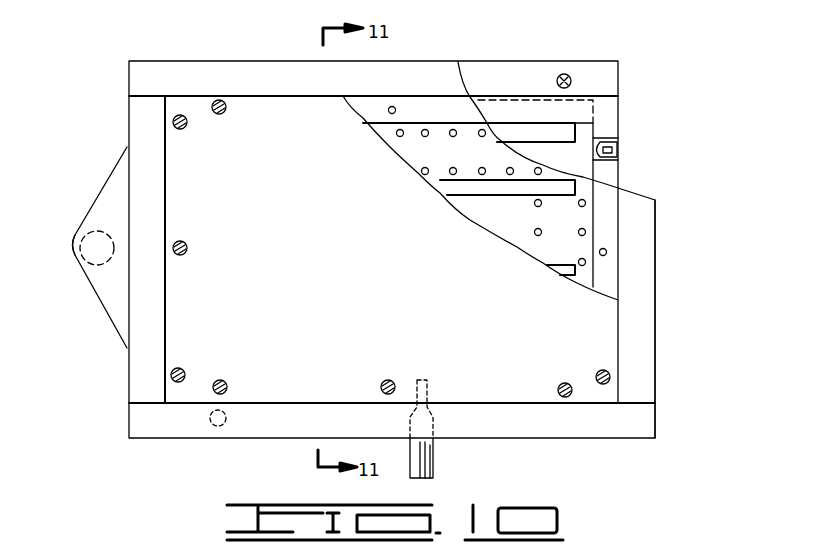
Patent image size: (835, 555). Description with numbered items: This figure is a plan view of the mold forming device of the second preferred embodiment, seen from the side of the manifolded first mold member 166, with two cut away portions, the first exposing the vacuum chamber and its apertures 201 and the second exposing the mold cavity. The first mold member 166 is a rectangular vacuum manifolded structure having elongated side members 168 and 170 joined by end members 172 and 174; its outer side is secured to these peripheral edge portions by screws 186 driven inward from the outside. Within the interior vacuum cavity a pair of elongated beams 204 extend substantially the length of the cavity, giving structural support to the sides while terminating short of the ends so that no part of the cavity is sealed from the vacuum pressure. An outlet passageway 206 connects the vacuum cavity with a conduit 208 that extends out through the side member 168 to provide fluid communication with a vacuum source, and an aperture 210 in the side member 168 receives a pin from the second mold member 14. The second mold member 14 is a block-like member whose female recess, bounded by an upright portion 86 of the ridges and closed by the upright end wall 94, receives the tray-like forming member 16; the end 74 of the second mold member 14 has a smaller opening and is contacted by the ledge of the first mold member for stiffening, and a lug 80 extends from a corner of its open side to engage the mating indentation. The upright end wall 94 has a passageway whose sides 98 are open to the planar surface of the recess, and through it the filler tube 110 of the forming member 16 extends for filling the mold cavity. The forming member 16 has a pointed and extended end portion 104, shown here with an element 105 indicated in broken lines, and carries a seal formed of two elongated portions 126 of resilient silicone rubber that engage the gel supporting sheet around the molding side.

The second mold member 14 is at (620, 75).
The forming member or tray 16 is at (87, 288).
The opposite end of second mold member 74 is at (620, 117).
The lug 80 is at (560, 75).
The upright portion 86 is at (487, 100).
The upright end wall 94 is at (593, 117).
The passageway sides 98 is at (618, 140).
The pointed and extended end portion 104 is at (97, 218).
The mounting hole 105 is at (73, 250).
The filler tube 110 is at (617, 150).
The elongated seal portions 126 is at (557, 133).
The first mold member 166 is at (660, 327).
The elongated side member 168 is at (155, 425).
The elongated side member 170 is at (215, 64).
The end member 172 is at (643, 384).
The end member 174 is at (138, 122).
The screws 186 is at (217, 114).
The apertures 201 is at (423, 137).
The elongated beams 204 is at (543, 272).
The outlet passageway 206 is at (425, 392).
The conduit 208 is at (433, 472).
The aperture 210 is at (218, 426).